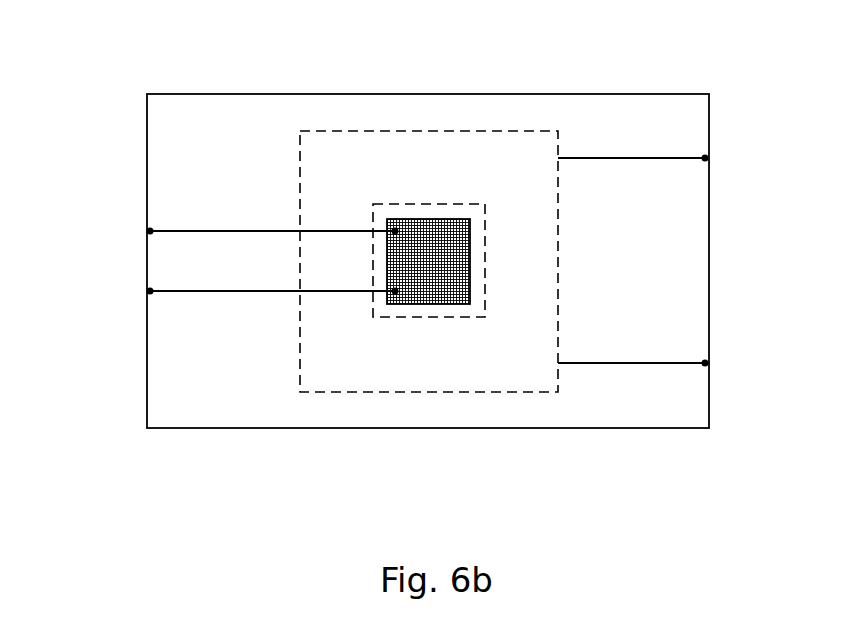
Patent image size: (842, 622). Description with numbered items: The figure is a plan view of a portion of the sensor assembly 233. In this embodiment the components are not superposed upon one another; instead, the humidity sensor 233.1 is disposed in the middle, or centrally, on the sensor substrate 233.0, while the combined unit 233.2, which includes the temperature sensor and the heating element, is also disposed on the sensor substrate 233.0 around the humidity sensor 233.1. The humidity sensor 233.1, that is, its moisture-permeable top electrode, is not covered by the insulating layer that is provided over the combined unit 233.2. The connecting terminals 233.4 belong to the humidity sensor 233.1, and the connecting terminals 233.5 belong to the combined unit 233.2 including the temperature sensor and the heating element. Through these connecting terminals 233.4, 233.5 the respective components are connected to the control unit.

The sensor assembly 233 is at (118, 257).
The sensor substrate 233.0 is at (649, 105).
The humidity sensor 233.1 is at (410, 297).
The combined unit 233.2 is at (476, 393).
The connecting terminals of humidity sensor 233.4 is at (150, 231).
The connecting terminals of combined unit 233.5 is at (710, 160).